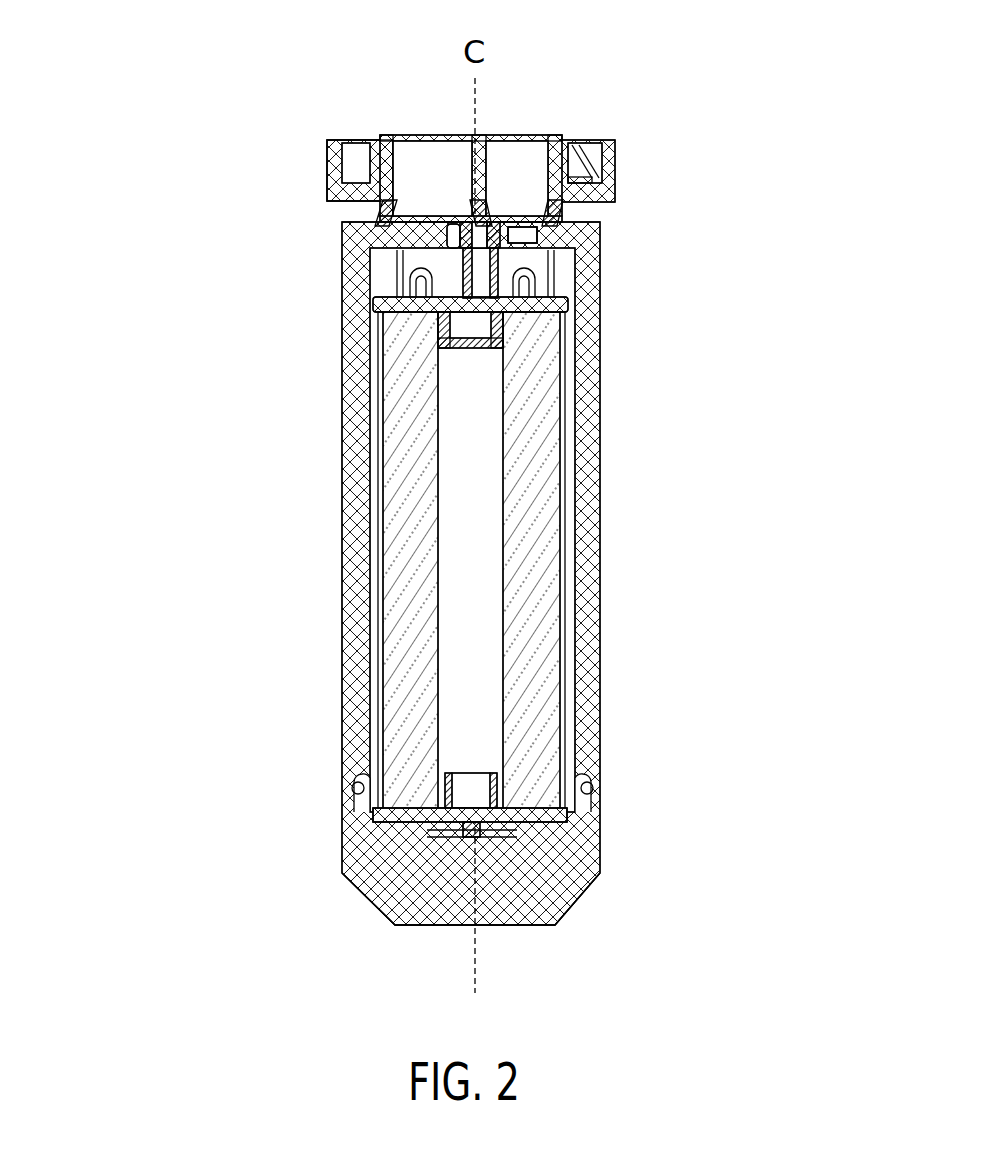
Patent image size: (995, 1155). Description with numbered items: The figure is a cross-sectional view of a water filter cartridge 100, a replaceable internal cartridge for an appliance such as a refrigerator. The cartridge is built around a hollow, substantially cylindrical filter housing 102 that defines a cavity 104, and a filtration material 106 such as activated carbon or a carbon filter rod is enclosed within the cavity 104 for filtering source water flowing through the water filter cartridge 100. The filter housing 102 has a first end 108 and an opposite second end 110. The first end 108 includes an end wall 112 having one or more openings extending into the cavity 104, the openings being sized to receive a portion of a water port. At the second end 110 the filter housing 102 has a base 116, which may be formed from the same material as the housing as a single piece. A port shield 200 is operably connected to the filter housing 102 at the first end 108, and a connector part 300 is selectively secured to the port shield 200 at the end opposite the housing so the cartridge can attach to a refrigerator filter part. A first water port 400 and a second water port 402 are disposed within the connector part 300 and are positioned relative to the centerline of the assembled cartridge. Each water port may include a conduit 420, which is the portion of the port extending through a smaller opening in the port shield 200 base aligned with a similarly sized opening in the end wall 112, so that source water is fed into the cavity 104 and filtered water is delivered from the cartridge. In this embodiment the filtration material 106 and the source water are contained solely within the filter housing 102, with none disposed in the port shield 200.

The water filter cartridge 100 is at (683, 82).
The filter housing 102 is at (355, 618).
The cavity 104 is at (567, 388).
The filtration material 106 is at (520, 622).
The first end 108 is at (297, 248).
The second end 110 is at (300, 780).
The end wall 112 is at (377, 217).
The base 116 is at (360, 888).
The port shield 200 is at (567, 212).
The connector part 300 is at (330, 147).
The first water port 400 is at (420, 163).
The second water port 402 is at (503, 163).
The conduit 420 is at (457, 243).